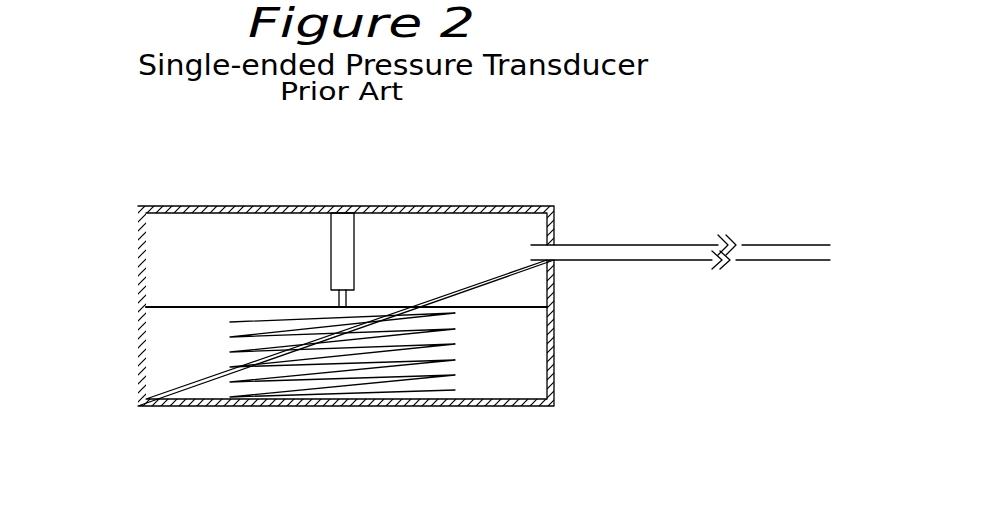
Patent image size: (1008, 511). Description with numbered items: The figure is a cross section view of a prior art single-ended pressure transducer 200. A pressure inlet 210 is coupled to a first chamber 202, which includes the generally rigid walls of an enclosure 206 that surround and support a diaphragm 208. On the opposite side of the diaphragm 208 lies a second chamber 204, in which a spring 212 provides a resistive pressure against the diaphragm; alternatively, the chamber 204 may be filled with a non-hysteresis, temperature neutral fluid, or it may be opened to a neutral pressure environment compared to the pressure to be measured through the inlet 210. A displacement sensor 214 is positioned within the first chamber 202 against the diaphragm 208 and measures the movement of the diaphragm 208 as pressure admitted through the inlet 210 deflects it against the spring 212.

The single-ended pressure transducer 200 is at (372, 192).
The first chamber 202 is at (180, 264).
The chamber 204 is at (180, 351).
The enclosure 206 is at (147, 406).
The diaphragm 208 is at (222, 307).
The pressure inlet 210 is at (711, 252).
The spring 212 is at (455, 346).
The displacement sensor 214 is at (332, 252).